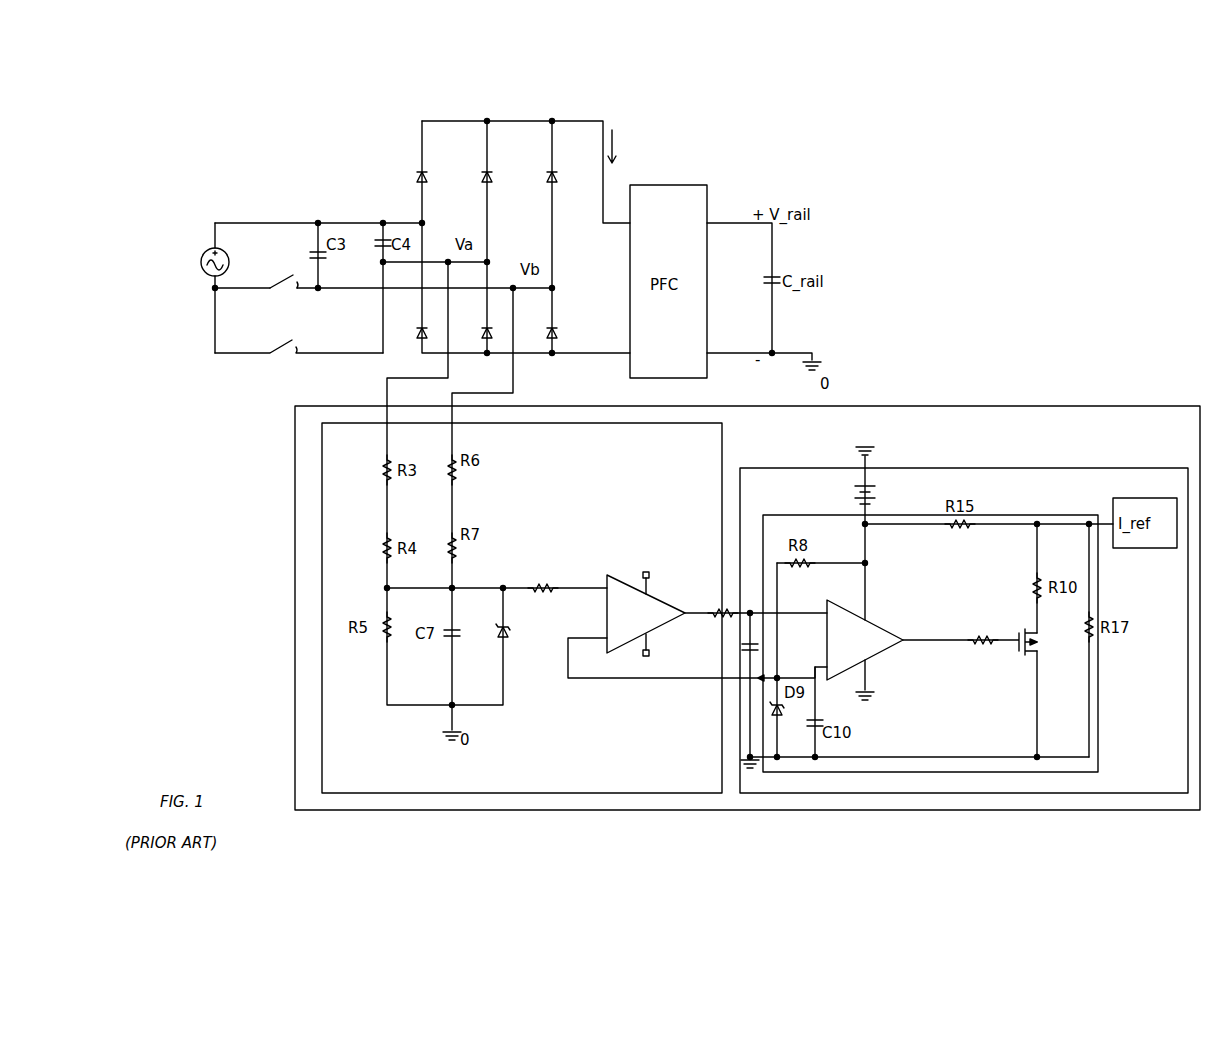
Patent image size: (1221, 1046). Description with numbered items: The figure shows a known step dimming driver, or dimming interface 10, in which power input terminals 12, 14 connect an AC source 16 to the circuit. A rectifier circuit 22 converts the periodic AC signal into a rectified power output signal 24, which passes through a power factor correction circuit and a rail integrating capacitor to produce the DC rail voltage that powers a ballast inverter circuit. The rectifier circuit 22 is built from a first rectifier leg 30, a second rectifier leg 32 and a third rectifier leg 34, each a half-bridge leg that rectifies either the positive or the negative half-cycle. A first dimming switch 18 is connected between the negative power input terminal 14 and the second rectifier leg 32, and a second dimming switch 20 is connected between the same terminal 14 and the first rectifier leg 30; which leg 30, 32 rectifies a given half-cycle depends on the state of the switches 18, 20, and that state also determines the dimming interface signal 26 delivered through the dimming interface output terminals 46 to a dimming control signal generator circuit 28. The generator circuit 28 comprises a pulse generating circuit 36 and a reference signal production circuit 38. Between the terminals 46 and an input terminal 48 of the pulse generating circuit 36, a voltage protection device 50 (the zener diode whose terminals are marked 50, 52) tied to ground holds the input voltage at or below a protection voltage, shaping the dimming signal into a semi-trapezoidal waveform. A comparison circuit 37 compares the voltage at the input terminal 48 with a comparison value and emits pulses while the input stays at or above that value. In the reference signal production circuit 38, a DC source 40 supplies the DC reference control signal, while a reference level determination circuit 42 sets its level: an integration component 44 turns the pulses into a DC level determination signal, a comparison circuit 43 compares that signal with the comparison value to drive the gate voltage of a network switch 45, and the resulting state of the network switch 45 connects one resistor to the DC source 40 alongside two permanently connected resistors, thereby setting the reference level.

The dimming interface 10 is at (990, 207).
The power input terminal 12 is at (215, 223).
The power input terminal 14 is at (215, 288).
The AC source 16 is at (205, 253).
The first dimming switch 18 is at (292, 276).
The second dimming switch 20 is at (292, 340).
The rectifier circuit 22 is at (492, 218).
The rectified power output signal 24 is at (616, 142).
The dimming interface signal 26 is at (478, 585).
The dimming control signal generator circuit 28 is at (295, 650).
The first rectifier leg 30 is at (487, 131).
The second rectifier leg 32 is at (552, 137).
The third rectifier leg 34 is at (421, 131).
The pulse generating circuit 36 is at (322, 532).
The comparison circuit 37 is at (652, 622).
The reference signal production circuit 38 is at (962, 468).
The DC source 40 is at (855, 490).
The reference level determination circuit 42 is at (857, 772).
The comparison circuit 43 is at (895, 642).
The integration component 44 is at (744, 690).
The network switch 45 is at (1040, 650).
The dimming interface output terminals 46 is at (448, 260).
The input terminal 48 is at (524, 686).
The voltage protection device 50 is at (503, 689).
The diode D14 terminal 52 is at (505, 637).